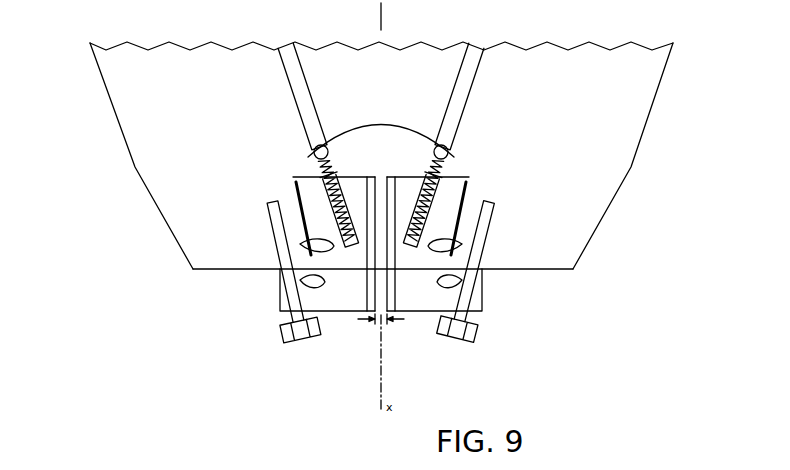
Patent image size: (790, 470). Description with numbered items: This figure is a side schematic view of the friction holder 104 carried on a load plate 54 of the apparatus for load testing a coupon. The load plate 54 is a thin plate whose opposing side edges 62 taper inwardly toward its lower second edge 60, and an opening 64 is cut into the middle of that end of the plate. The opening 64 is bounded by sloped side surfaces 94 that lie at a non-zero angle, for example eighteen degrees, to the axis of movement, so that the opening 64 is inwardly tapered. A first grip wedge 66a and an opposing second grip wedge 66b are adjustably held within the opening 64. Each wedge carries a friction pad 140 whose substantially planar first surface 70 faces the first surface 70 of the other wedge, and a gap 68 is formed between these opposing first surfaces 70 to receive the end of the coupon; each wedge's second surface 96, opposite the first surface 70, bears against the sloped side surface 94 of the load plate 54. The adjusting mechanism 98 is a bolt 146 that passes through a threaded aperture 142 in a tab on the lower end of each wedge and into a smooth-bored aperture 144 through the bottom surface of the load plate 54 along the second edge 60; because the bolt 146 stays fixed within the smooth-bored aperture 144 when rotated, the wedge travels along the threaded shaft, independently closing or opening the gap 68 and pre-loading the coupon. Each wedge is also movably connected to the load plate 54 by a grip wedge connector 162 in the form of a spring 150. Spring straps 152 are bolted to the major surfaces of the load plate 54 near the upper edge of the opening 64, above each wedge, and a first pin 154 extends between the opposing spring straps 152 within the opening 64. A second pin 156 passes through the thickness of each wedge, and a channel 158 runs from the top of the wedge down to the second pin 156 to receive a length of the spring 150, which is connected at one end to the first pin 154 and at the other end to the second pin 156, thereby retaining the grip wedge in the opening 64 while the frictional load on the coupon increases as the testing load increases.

The load plate 54 is at (626, 160).
The second edge 60 is at (553, 271).
The side edge 62 is at (117, 120).
The opening 64 is at (413, 127).
The first grip wedge 66a is at (338, 313).
The second grip wedge 66b is at (424, 313).
The gap 68 is at (378, 325).
The first surface 70 is at (368, 203).
The side surface 94 is at (306, 146).
The second surface 96 is at (300, 244).
The adjusting mechanism 98 is at (287, 342).
The friction holder 104 is at (224, 311).
The friction pad 140 is at (366, 288).
The threaded aperture 142 is at (300, 280).
The smooth-bored aperture 144 is at (272, 233).
The bolt 146 is at (283, 326).
The spring 150 is at (316, 160).
The spring strap 152 is at (282, 58).
The first pin 154 is at (312, 150).
The second pin 156 is at (346, 250).
The channel 158 is at (354, 206).
The grip wedge connector 162 is at (338, 179).